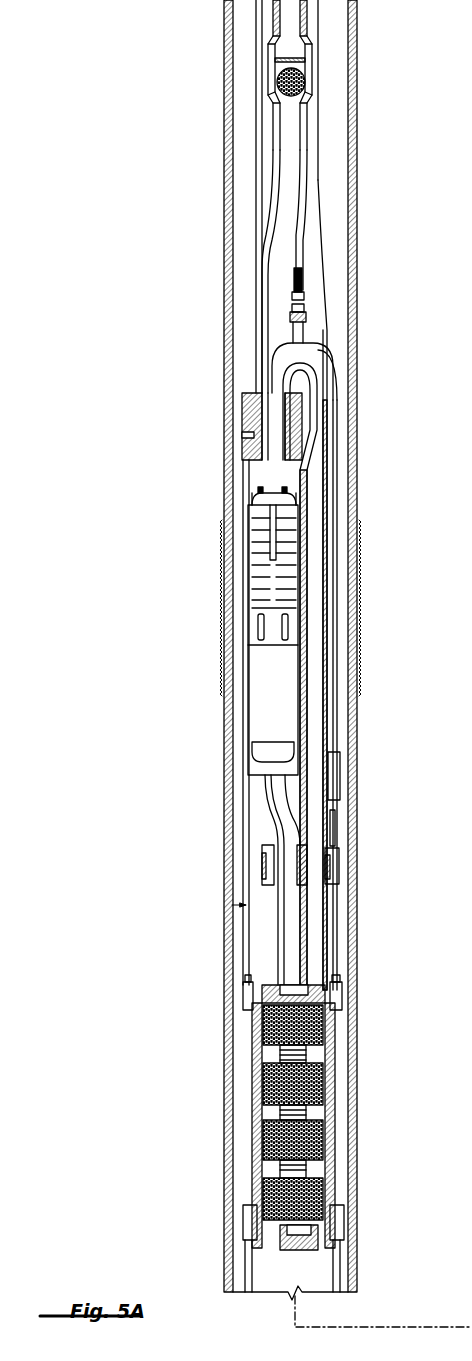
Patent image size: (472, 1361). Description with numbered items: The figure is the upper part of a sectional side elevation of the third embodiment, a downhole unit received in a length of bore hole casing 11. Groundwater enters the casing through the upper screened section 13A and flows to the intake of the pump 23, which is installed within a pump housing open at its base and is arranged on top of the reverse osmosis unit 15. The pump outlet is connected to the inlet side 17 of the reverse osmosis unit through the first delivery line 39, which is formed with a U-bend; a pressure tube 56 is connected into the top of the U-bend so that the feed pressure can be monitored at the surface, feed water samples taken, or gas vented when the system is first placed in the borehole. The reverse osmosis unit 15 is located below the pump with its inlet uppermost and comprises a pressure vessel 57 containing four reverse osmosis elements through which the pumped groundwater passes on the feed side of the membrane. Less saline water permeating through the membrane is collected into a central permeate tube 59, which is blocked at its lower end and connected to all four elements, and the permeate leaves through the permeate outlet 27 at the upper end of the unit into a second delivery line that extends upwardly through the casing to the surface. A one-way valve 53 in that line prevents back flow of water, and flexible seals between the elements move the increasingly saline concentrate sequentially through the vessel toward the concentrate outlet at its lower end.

The bore hole casing 11 is at (226, 204).
The upper screened section 13A is at (222, 620).
The reverse osmosis unit 15 is at (332, 1058).
The inlet side 17 is at (337, 995).
The pump 23 is at (285, 677).
The permeate outlet 27 is at (262, 995).
The first delivery line 39 is at (327, 400).
The one-way valve 53 is at (268, 82).
The pressure tube 56 is at (302, 252).
The pressure vessel 57 is at (332, 1117).
The central permeate tube 59 is at (330, 1175).